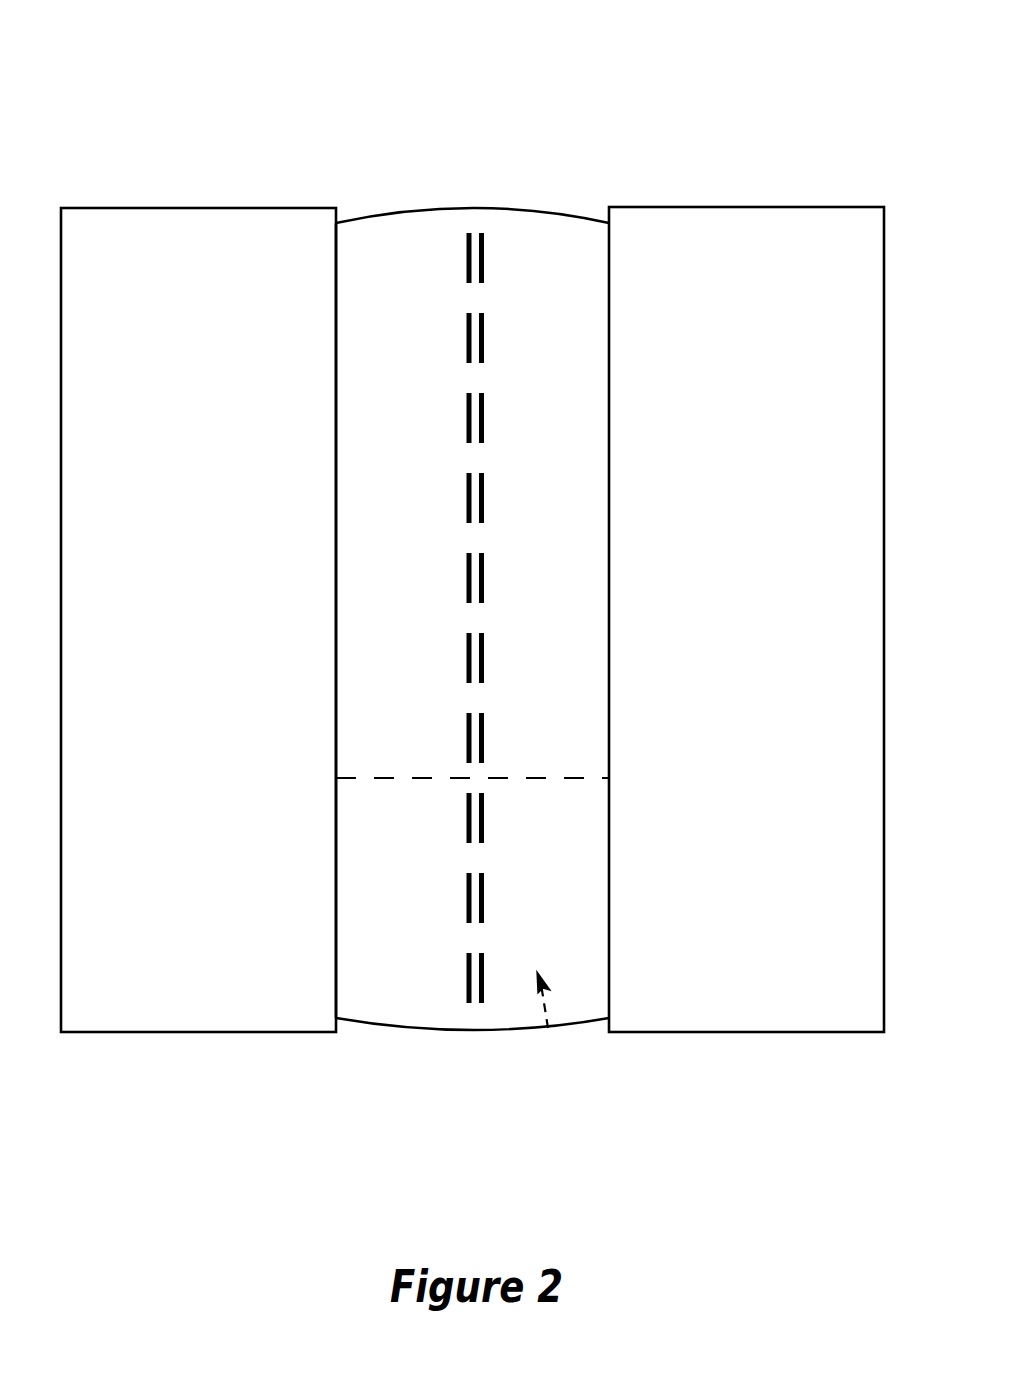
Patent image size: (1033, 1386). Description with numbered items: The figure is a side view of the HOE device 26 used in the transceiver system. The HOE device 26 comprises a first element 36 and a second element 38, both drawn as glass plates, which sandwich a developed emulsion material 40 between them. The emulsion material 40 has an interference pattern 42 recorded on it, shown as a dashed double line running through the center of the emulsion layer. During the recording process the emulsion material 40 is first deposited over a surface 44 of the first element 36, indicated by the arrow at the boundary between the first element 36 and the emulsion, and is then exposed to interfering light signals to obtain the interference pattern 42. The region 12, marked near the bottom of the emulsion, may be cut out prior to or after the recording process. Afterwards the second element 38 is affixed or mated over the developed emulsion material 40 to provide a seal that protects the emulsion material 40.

The HOE device 26 is at (744, 123).
The first element 36 is at (207, 1002).
The second element 38 is at (757, 1002).
The developed emulsion material 40 is at (421, 237).
The interference pattern 42 is at (467, 990).
The surface 44 is at (336, 258).
The region 12 is at (548, 1030).